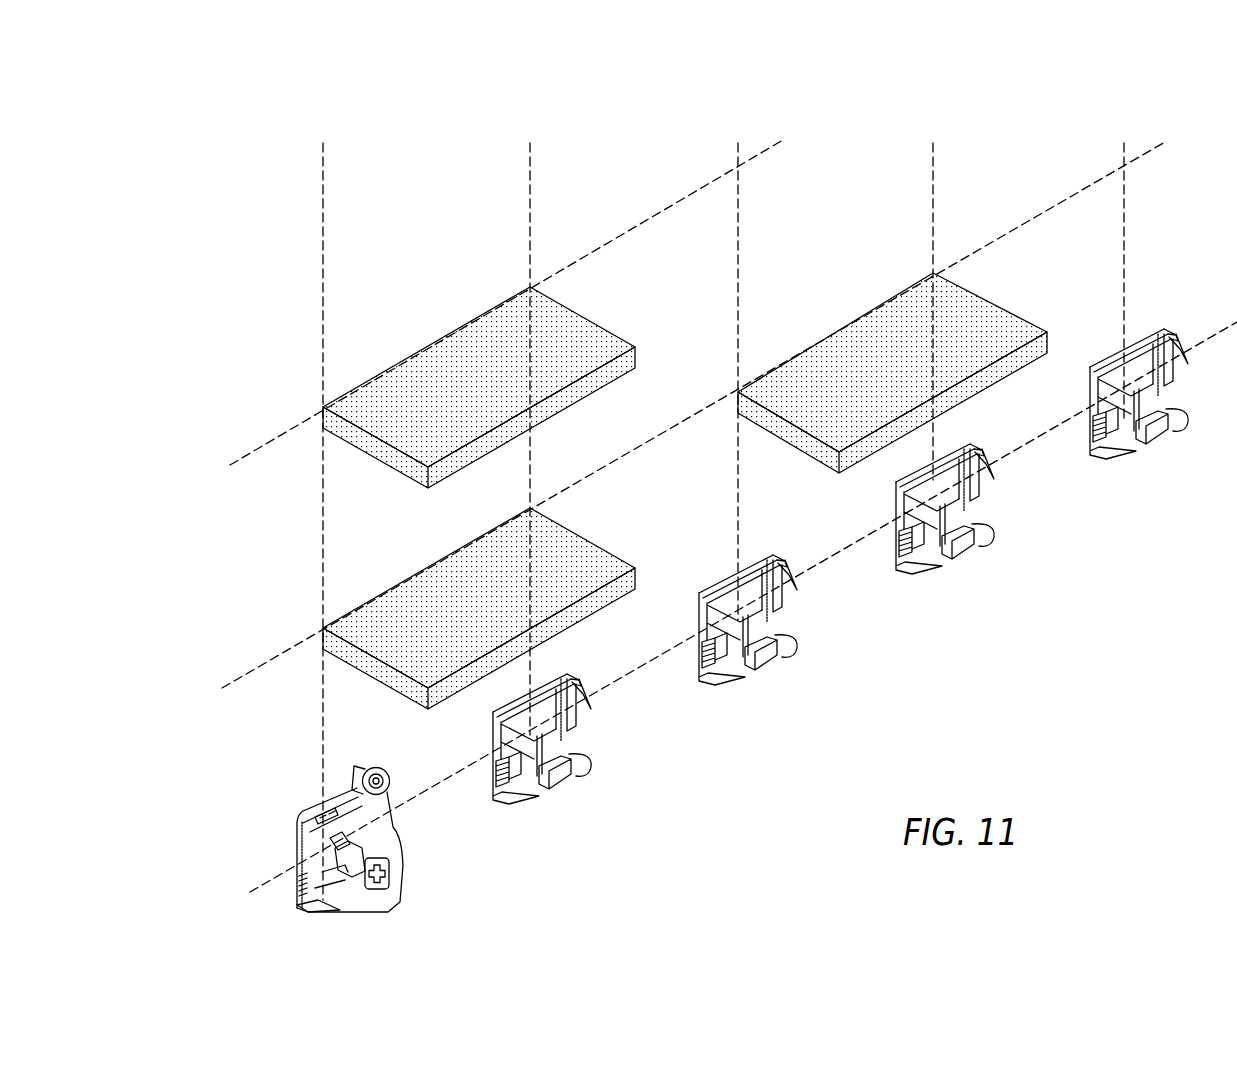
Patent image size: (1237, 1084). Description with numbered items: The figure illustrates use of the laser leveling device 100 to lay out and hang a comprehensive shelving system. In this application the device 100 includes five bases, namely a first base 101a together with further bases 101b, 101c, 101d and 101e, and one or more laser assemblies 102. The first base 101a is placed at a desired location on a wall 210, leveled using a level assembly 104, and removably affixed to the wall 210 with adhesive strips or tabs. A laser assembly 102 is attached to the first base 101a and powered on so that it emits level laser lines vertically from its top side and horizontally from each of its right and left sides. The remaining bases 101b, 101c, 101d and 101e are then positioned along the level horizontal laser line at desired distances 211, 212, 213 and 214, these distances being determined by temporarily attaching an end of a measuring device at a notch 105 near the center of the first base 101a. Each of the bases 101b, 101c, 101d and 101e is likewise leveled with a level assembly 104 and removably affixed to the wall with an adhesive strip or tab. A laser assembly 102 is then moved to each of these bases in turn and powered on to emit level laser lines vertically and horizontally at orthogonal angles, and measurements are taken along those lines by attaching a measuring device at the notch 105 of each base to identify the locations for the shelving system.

The laser leveling device 100 is at (268, 763).
The first base 101a is at (298, 843).
The second base 101b is at (578, 722).
The third base 101c is at (773, 570).
The fourth base 101d is at (987, 487).
The fifth base 101e is at (1167, 323).
The laser assembly 102 is at (373, 838).
The level assembly 104 is at (364, 764).
The notch 105 is at (307, 857).
The wall 210 is at (340, 855).
The desired distance 211 is at (570, 757).
The desired distance 212 is at (740, 610).
The desired distance 213 is at (968, 530).
The desired distance 214 is at (1125, 393).